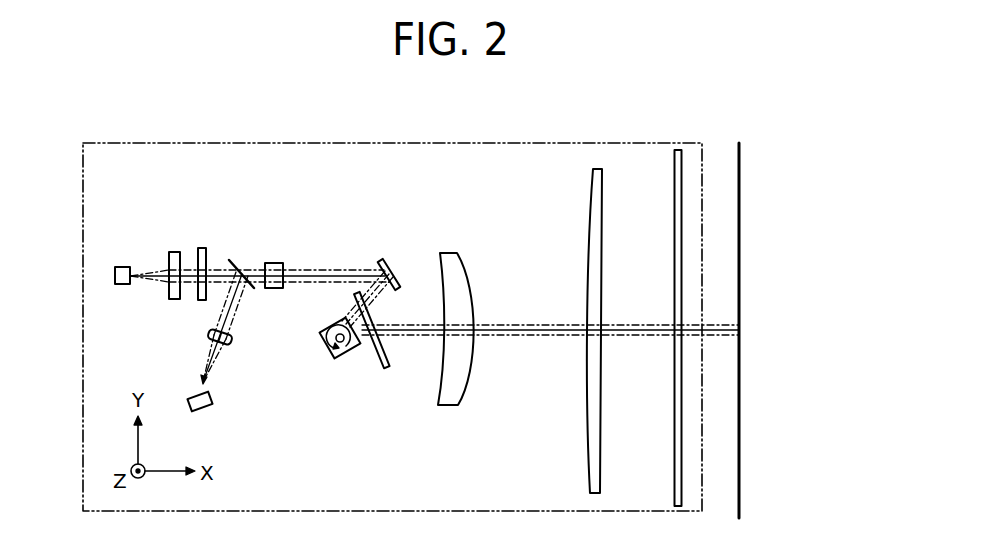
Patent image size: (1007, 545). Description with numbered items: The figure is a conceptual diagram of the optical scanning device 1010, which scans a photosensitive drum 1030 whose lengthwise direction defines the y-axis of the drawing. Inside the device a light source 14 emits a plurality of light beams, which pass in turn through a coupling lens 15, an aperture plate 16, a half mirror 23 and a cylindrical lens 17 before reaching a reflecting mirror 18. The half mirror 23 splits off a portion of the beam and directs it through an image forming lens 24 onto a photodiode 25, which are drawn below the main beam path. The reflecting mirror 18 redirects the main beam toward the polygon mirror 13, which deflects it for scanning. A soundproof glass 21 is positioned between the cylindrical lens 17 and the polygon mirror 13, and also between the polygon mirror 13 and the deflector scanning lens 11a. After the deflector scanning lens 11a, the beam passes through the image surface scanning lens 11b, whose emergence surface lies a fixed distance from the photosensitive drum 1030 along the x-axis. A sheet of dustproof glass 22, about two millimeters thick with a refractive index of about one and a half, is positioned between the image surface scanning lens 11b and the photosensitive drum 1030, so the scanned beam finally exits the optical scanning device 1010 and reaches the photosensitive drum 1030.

The optical scanning device 1010 is at (464, 146).
The photosensitive drum 1030 is at (741, 166).
The light source 14 is at (120, 265).
The coupling lens 15 is at (173, 251).
The aperture plate 16 is at (202, 247).
The half mirror 23 is at (243, 258).
The cylindrical lens 17 is at (274, 262).
The reflecting mirror 18 is at (391, 258).
The image forming lens 24 is at (233, 340).
The photodiode 25 is at (212, 399).
The polygon mirror 13 is at (325, 347).
The soundproof glass 21 is at (378, 362).
The deflector scanning lens 11a is at (470, 270).
The image surface scanning lens 11b is at (602, 232).
The dustproof glass 22 is at (675, 450).